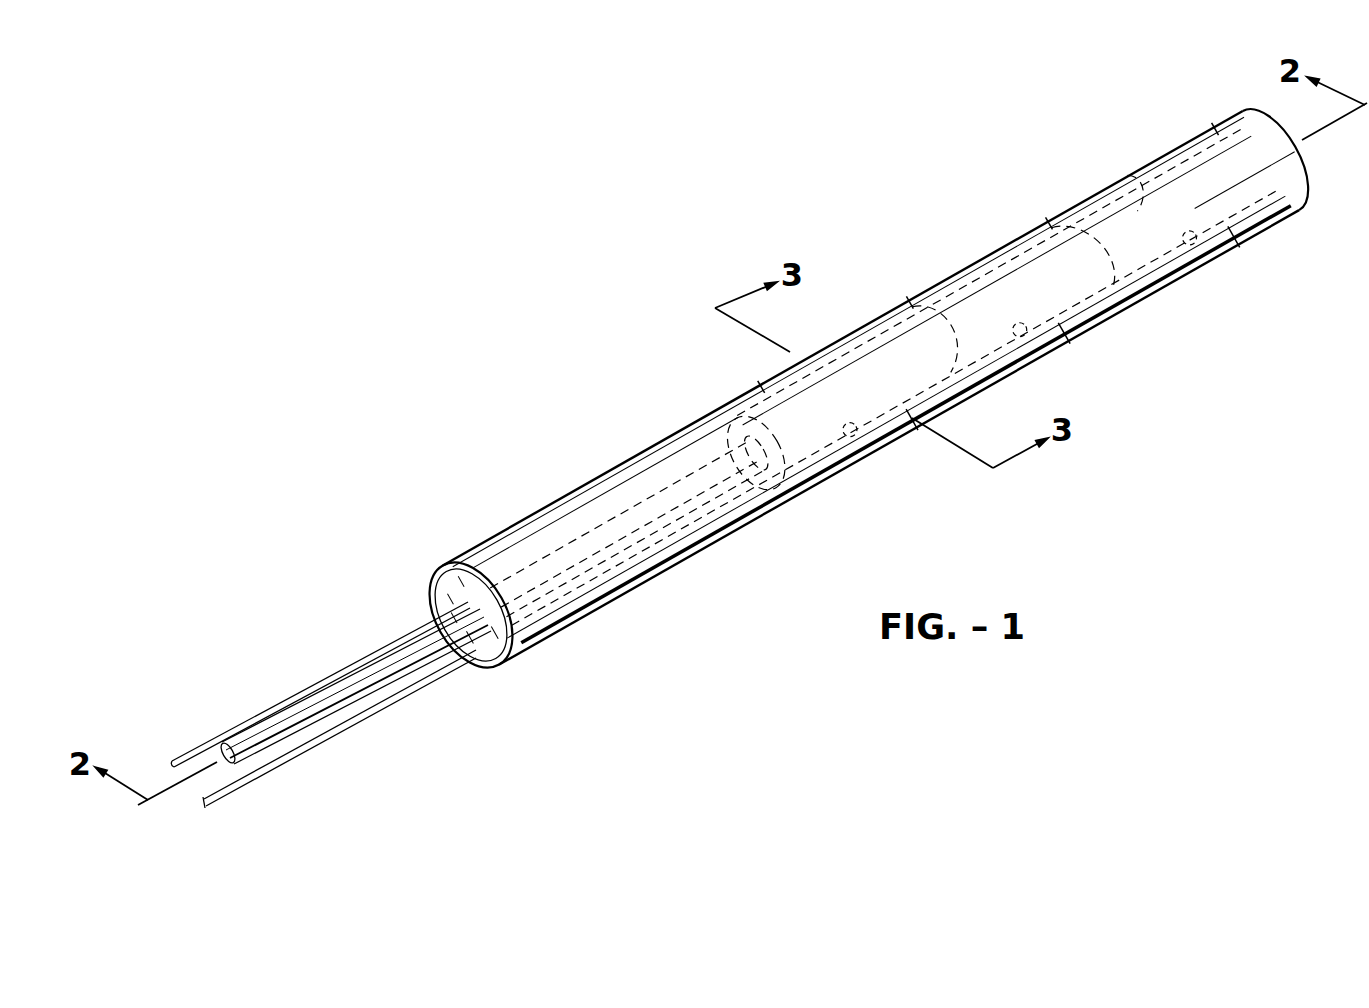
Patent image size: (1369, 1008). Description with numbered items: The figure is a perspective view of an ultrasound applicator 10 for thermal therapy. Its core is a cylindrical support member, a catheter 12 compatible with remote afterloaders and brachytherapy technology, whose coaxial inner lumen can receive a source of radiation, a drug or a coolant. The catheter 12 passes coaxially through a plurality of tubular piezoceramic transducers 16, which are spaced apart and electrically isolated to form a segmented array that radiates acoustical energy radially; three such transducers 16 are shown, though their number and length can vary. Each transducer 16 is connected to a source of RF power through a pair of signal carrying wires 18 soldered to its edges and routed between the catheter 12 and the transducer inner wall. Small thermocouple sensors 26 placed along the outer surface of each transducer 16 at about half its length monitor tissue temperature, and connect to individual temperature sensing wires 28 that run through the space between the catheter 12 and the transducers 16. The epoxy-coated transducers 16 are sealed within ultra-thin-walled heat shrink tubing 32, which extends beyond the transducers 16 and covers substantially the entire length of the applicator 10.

The ultrasound applicator 10 is at (538, 296).
The catheter 12 is at (258, 727).
The tubular piezoceramic transducers 16 is at (758, 375).
The signal carrying wires 18 is at (172, 762).
The thermocouple sensors 26 is at (906, 457).
The temperature sensing wires 28 is at (204, 800).
The heat shrink tubing 32 is at (1283, 177).